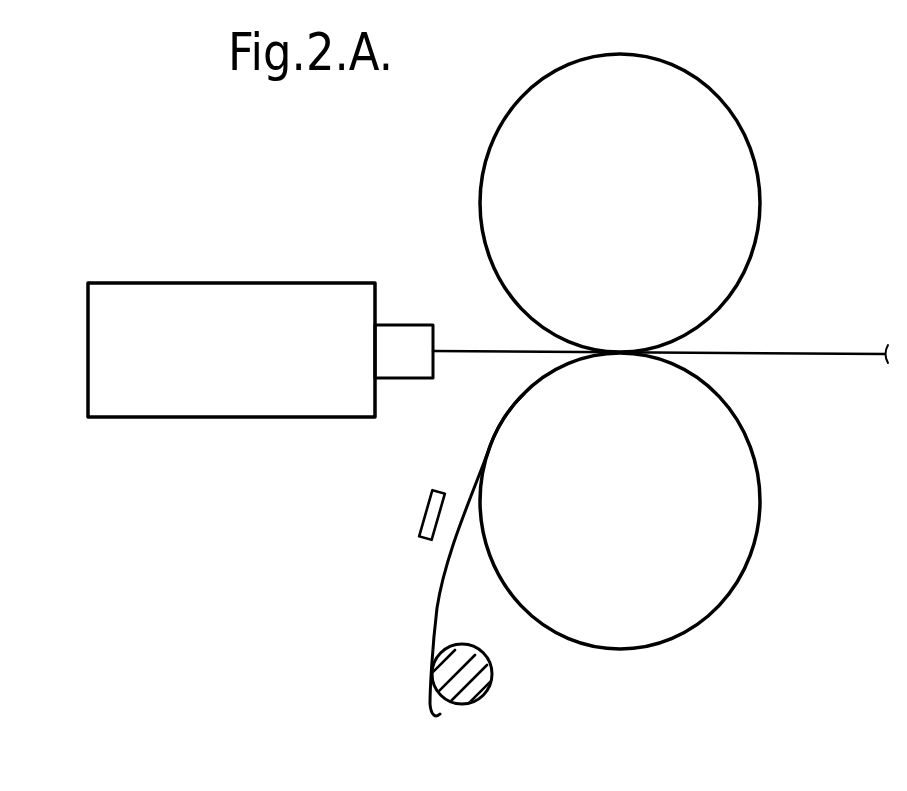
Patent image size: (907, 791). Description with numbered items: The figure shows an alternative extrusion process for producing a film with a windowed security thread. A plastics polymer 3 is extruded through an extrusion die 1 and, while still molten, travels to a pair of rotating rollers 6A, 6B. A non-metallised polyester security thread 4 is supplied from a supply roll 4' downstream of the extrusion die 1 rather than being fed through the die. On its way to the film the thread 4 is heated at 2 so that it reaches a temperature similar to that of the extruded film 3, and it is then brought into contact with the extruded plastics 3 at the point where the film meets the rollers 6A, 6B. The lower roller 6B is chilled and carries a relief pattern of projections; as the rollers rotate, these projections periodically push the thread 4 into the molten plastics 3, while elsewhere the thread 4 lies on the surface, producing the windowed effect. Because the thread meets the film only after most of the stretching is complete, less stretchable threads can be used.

The extrusion die 1 is at (253, 417).
The heater 2 is at (426, 518).
The plastics polymer 3 is at (482, 352).
The security thread 4 is at (449, 555).
The supply roll 4' is at (454, 688).
The upper roller 6A is at (753, 152).
The lower roller 6B is at (733, 588).